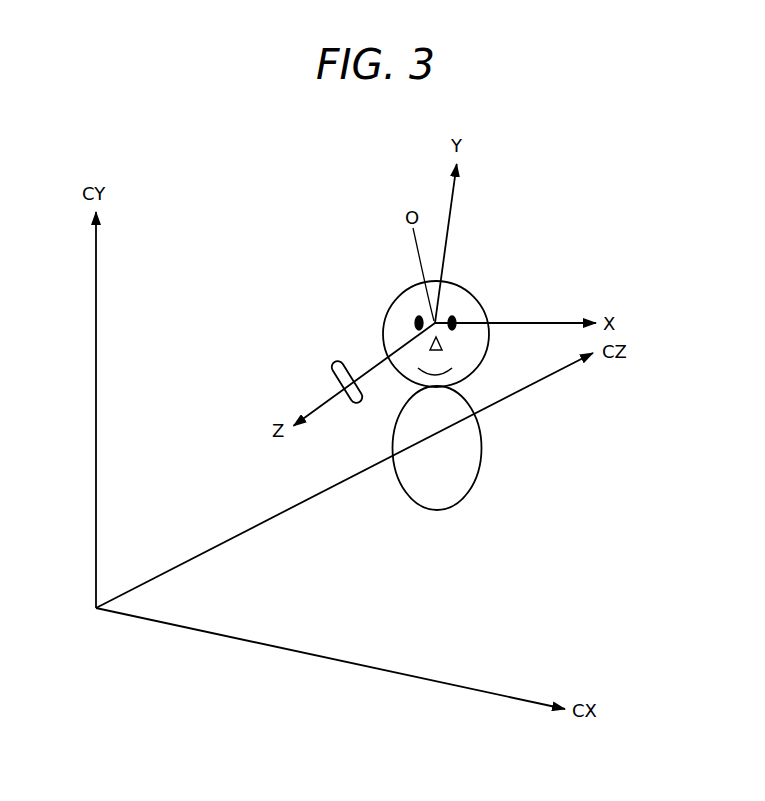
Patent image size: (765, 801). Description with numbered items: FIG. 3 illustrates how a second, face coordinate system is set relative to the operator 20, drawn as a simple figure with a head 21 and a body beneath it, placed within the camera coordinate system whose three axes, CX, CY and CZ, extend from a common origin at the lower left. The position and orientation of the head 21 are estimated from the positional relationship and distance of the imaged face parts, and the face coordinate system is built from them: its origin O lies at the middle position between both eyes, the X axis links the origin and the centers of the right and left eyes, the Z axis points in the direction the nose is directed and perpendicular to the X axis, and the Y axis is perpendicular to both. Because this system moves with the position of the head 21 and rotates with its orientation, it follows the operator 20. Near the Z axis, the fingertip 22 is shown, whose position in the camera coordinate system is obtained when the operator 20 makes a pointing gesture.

The operator 20 is at (485, 271).
The head 21 is at (403, 300).
The fingertip 22 is at (415, 323).